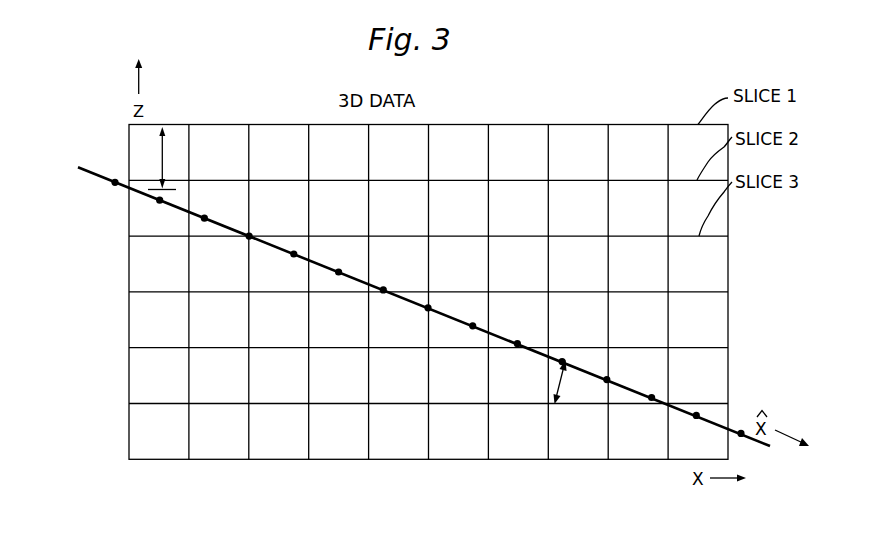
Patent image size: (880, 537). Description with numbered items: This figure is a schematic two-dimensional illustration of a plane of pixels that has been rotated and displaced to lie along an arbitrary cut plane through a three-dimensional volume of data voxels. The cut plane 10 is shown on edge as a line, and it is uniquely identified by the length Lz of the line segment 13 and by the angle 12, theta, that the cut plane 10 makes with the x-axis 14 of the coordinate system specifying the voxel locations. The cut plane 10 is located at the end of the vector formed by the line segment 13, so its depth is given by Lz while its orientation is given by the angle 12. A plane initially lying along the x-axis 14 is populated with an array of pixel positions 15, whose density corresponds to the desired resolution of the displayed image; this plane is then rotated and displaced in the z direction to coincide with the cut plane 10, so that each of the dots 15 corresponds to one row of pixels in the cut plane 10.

The cut plane 10 is at (95, 178).
The angle 12 is at (553, 382).
The line segment 13 is at (170, 168).
The x-axis 14 is at (513, 125).
The pixel positions 15 is at (113, 188).